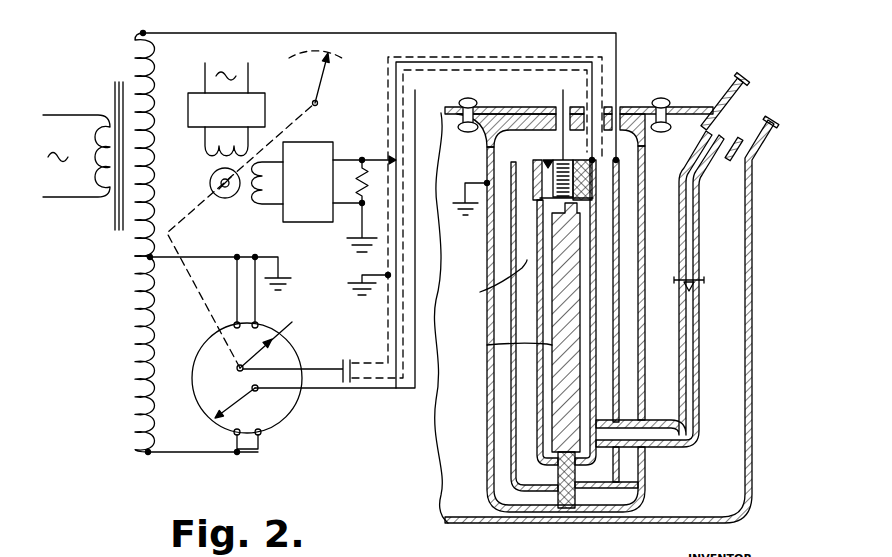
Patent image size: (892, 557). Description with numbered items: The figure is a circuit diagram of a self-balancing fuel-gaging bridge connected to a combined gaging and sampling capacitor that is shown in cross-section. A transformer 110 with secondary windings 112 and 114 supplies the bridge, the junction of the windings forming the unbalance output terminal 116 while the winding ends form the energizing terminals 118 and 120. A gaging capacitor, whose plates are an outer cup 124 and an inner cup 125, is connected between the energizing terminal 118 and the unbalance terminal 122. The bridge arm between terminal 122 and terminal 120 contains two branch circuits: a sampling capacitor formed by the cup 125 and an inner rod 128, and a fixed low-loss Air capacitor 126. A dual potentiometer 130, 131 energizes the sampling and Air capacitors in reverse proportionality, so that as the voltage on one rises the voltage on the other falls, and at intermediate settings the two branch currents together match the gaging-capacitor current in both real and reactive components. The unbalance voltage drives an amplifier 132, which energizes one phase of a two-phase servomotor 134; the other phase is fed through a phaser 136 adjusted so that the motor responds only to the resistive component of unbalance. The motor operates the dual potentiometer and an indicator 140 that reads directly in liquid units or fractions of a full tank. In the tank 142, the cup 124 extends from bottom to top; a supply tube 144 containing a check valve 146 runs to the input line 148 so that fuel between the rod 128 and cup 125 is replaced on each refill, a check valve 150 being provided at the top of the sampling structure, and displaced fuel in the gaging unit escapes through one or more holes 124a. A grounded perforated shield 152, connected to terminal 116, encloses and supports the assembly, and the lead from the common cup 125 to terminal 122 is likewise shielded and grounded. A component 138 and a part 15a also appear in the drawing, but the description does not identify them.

The transformer 110 is at (113, 84).
The secondary winding 112 is at (150, 92).
The secondary winding 114 is at (152, 337).
The unbalance output terminal 116 is at (150, 257).
The energizing terminal 118 is at (145, 31).
The energizing terminal 120 is at (148, 454).
The unbalance terminal 122 is at (394, 156).
The outer cup 124 is at (595, 488).
The holes 124a is at (515, 488).
The inner cup 125 is at (550, 460).
The Air capacitor 126 is at (343, 363).
The inner rod 128 is at (582, 355).
The dual potentiometer 130 is at (245, 403).
The dual potentiometer 131 is at (283, 342).
The amplifier 132 is at (314, 142).
The two-phase servomotor 134 is at (225, 198).
The phaser 136 is at (190, 122).
The load resistor 138 is at (366, 197).
The indicator 140 is at (328, 75).
The tank 142 is at (753, 430).
The supply tube 144 is at (700, 368).
The check valve 146 is at (700, 287).
The input line 148 is at (732, 92).
The check valve 150 is at (548, 160).
The perforated shield 152 is at (488, 408).
The electrode nut 15a is at (592, 180).